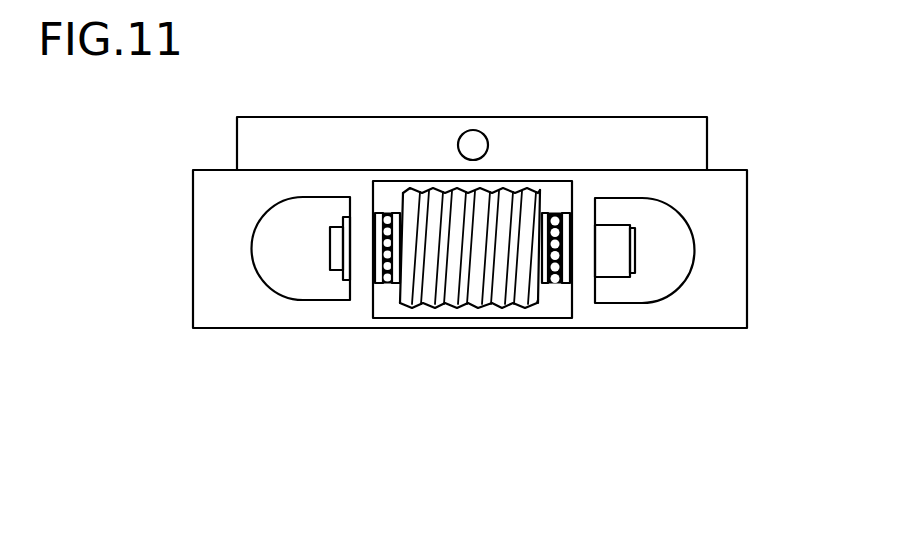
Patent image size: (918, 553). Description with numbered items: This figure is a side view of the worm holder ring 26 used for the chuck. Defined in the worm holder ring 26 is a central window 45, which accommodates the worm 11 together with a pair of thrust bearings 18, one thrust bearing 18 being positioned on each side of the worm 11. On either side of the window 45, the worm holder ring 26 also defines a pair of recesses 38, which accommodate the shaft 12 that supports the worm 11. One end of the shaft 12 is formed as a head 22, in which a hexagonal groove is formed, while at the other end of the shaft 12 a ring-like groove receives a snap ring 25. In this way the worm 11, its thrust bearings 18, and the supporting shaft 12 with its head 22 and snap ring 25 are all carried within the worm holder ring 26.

The worm 11 is at (488, 307).
The shaft 12 is at (327, 247).
The thrust bearings 18 is at (375, 285).
The head 22 is at (615, 280).
The snap ring 25 is at (345, 281).
The worm holder ring 26 is at (748, 278).
The recesses 38 is at (290, 223).
The window 45 is at (559, 186).